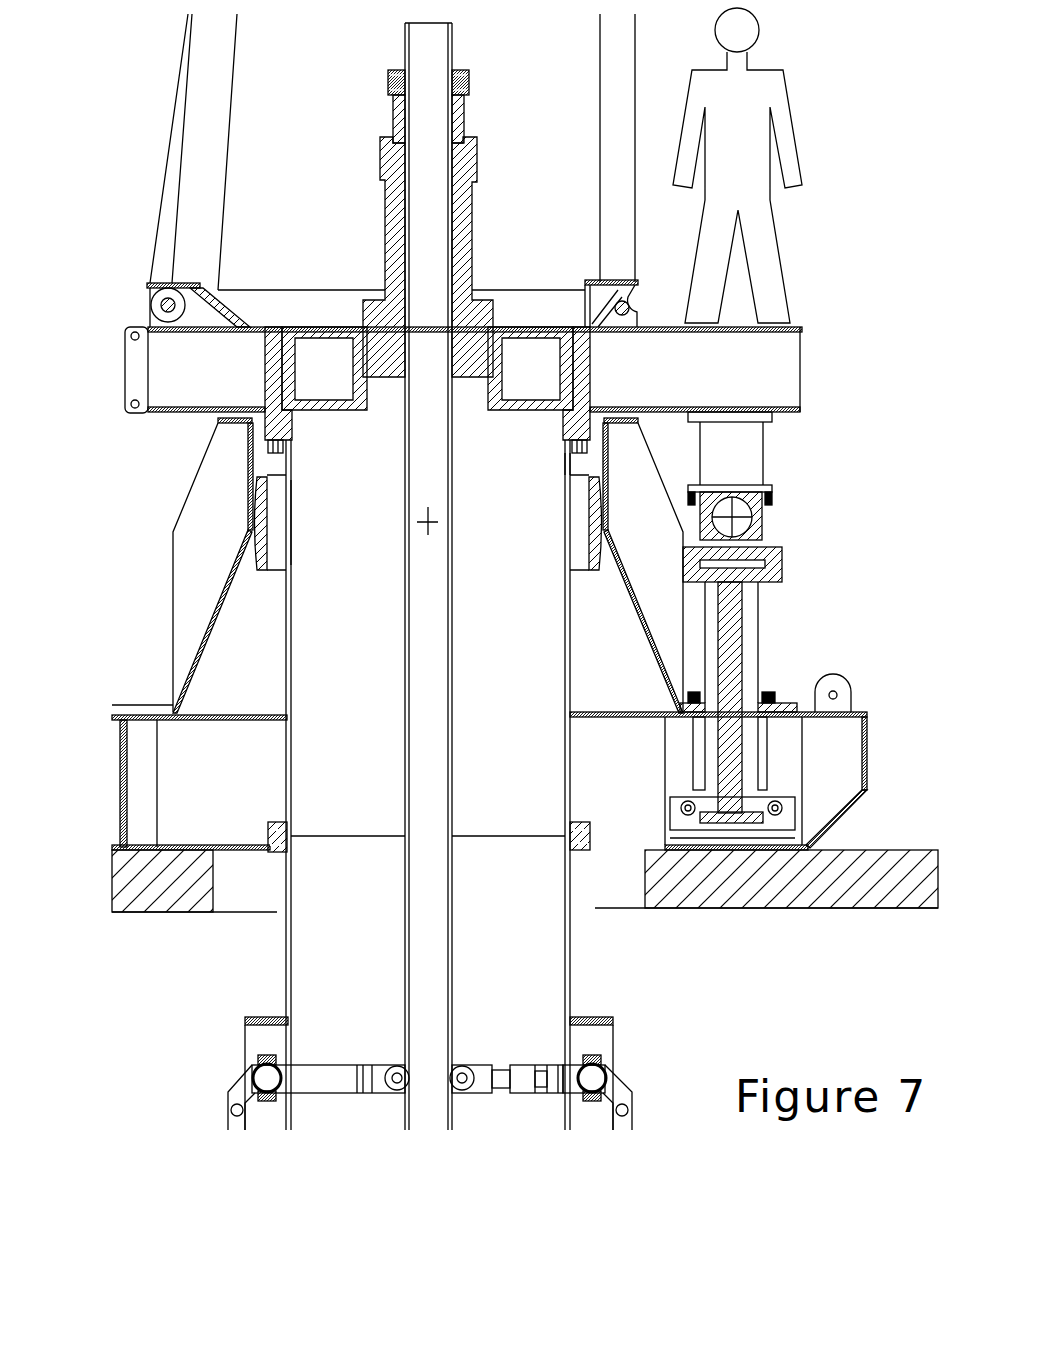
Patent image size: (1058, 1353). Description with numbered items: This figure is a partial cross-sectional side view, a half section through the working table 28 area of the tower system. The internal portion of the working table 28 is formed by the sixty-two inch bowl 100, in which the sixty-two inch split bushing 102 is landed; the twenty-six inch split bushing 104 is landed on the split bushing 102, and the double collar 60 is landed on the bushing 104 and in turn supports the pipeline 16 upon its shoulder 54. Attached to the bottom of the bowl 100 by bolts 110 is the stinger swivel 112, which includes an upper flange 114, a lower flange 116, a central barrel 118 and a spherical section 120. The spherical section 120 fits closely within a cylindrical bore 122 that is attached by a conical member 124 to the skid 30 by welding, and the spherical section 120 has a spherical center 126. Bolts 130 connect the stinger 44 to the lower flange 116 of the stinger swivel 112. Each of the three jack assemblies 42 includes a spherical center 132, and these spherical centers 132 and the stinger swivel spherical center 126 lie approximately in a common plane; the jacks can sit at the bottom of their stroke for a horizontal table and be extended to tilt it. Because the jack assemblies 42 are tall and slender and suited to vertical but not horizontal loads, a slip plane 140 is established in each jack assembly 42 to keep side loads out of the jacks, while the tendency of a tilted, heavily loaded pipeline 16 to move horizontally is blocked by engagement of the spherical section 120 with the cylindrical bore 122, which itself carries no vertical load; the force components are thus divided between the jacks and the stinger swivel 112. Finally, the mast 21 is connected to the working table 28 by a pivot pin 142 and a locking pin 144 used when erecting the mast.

The pipeline 16 is at (453, 555).
The mast 21 is at (245, 53).
The working table 28 is at (793, 352).
The skid 30 is at (870, 743).
The jack assembly 42 is at (798, 597).
The stinger 44 is at (572, 973).
The shoulder 54 is at (403, 85).
The double collar 60 is at (462, 117).
The bowl 100 is at (587, 377).
The split bushing 102 is at (568, 357).
The split bushing 104 is at (472, 237).
The bolts 110 is at (568, 458).
The stinger swivel 112 is at (312, 557).
The upper flange 114 is at (563, 443).
The lower flange 116 is at (292, 830).
The central barrel 118 is at (292, 600).
The spherical section 120 is at (268, 510).
The cylindrical bore 122 is at (253, 462).
The conical member 124 is at (207, 650).
The spherical center 126 is at (430, 520).
The bolts 130 is at (573, 813).
The spherical center 132 is at (757, 517).
The slip plane 140 is at (778, 562).
The pivot pin 142 is at (155, 310).
The locking pin 144 is at (613, 302).